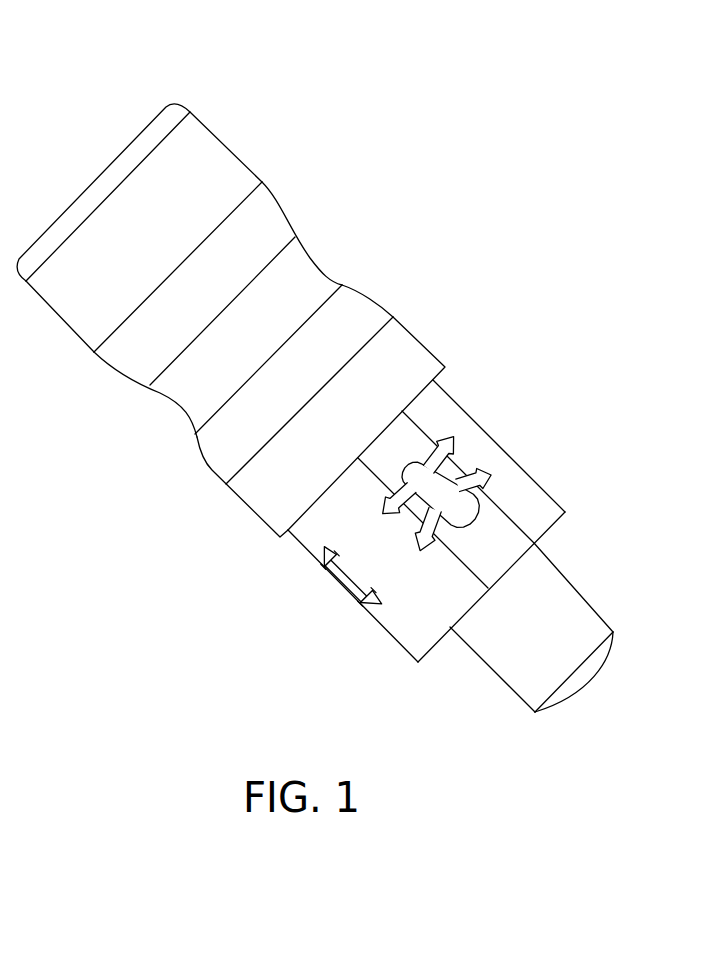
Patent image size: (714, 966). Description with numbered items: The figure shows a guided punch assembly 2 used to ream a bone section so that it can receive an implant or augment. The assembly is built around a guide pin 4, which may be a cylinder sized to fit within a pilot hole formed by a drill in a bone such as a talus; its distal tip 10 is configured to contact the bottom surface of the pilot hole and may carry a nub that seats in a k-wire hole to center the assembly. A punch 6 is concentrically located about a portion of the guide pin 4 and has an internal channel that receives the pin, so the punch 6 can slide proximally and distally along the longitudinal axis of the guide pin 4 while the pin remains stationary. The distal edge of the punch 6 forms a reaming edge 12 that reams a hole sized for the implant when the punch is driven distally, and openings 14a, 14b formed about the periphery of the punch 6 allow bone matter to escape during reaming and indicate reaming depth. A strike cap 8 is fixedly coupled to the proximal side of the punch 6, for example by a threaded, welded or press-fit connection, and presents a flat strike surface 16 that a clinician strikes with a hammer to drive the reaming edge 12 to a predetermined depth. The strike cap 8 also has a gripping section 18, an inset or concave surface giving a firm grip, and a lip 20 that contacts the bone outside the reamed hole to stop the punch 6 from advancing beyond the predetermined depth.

The guided punch assembly 2 is at (327, 70).
The guide pin 4 is at (562, 573).
The punch 6 is at (540, 485).
The strike cap 8 is at (231, 146).
The distal tip 10 is at (592, 675).
The reaming edge 12 is at (437, 643).
The opening 14a is at (447, 473).
The opening 14b is at (345, 585).
The strike surface 16 is at (105, 165).
The gripping section 18 is at (333, 244).
The lip 20 is at (287, 533).